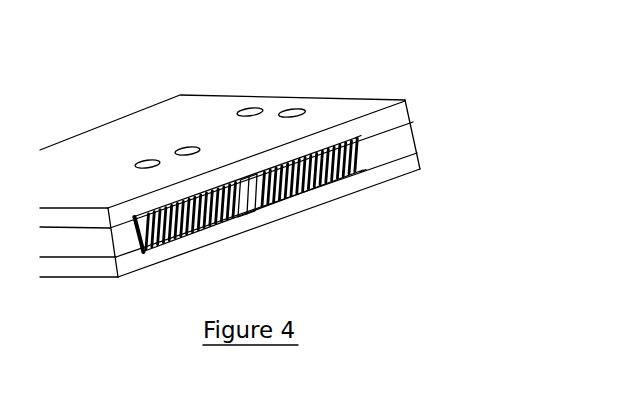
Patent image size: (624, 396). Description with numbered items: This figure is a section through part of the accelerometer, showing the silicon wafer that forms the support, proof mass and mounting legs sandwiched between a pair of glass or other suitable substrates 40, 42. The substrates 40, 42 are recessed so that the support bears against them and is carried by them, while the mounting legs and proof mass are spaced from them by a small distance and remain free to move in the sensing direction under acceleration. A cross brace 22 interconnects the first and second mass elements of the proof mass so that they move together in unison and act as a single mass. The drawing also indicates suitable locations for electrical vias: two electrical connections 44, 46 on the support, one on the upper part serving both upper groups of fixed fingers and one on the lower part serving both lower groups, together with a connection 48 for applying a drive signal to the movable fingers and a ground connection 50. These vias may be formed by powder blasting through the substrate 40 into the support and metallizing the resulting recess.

The cross brace 22 is at (252, 212).
The substrate 40 is at (93, 270).
The substrate 42 is at (65, 222).
The electrical connection 44 is at (187, 147).
The electrical connection 46 is at (148, 160).
The connection 48 is at (292, 109).
The ground connection 50 is at (250, 108).